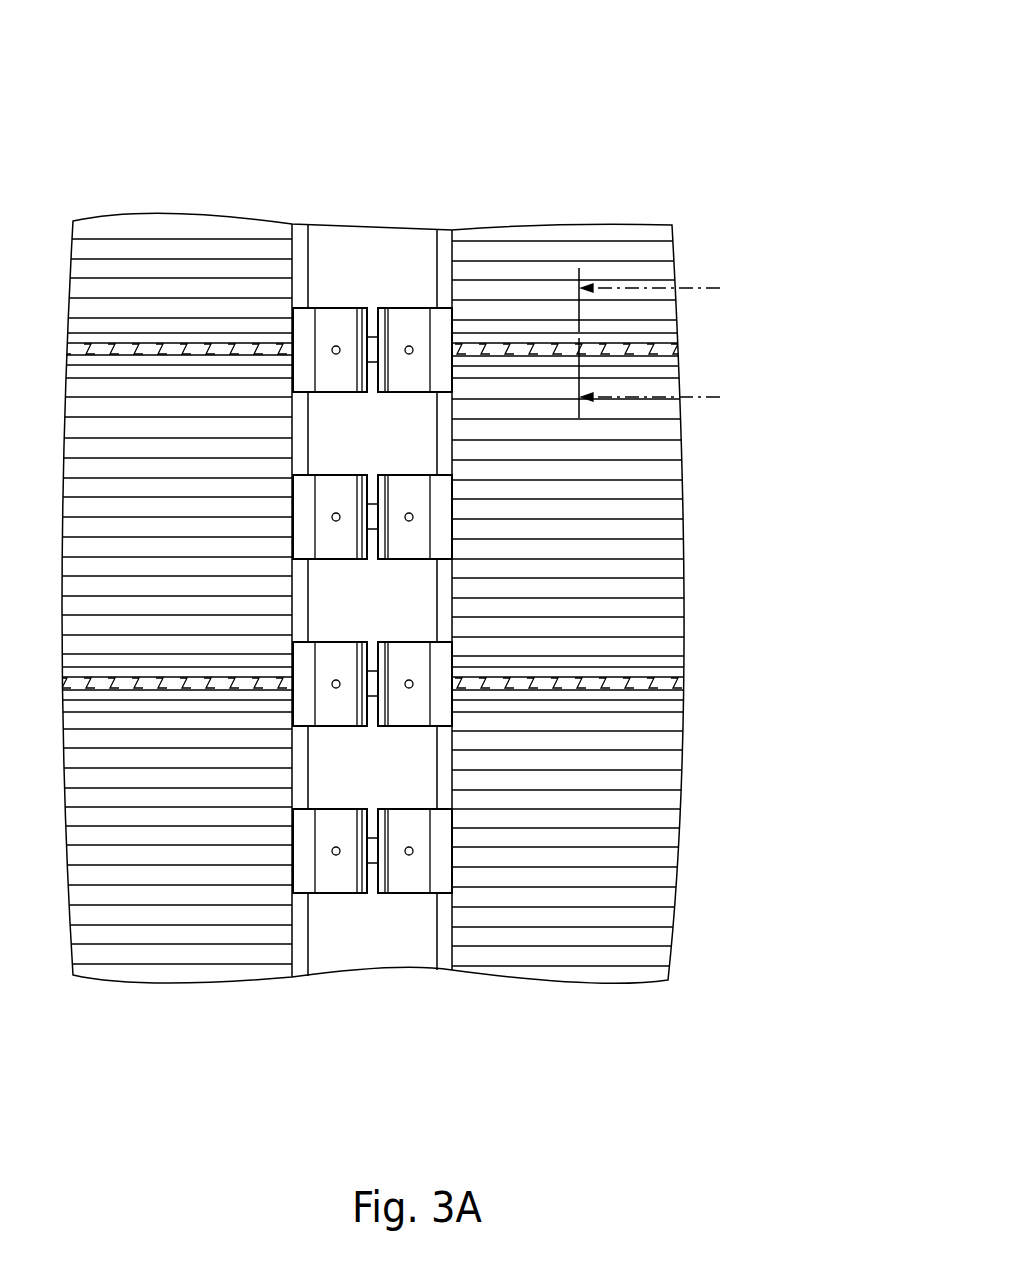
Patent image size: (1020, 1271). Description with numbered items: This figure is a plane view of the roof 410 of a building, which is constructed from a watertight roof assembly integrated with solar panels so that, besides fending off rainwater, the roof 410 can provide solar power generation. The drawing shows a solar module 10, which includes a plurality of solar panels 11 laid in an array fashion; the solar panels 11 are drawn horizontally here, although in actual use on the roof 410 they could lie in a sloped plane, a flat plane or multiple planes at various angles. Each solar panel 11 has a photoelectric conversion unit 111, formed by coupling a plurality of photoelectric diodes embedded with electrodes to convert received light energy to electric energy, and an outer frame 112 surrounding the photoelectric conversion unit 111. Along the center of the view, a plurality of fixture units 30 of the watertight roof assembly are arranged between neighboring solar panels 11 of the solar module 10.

The roof 410 is at (130, 98).
The solar module 10 is at (797, 213).
The solar panel 11 is at (681, 231).
The photoelectric conversion unit 111 is at (551, 242).
The outer frame 112 is at (447, 242).
The fixture unit 30 is at (319, 306).